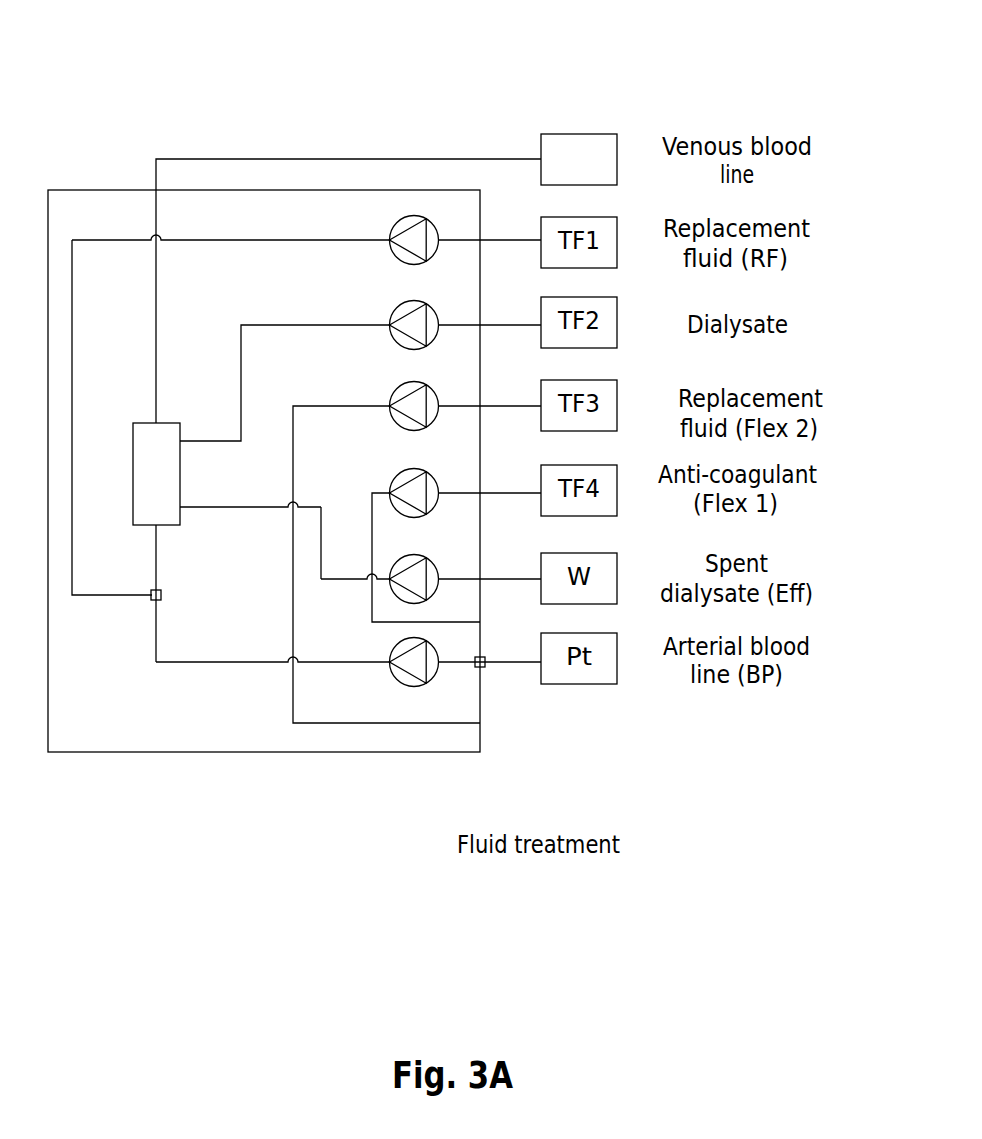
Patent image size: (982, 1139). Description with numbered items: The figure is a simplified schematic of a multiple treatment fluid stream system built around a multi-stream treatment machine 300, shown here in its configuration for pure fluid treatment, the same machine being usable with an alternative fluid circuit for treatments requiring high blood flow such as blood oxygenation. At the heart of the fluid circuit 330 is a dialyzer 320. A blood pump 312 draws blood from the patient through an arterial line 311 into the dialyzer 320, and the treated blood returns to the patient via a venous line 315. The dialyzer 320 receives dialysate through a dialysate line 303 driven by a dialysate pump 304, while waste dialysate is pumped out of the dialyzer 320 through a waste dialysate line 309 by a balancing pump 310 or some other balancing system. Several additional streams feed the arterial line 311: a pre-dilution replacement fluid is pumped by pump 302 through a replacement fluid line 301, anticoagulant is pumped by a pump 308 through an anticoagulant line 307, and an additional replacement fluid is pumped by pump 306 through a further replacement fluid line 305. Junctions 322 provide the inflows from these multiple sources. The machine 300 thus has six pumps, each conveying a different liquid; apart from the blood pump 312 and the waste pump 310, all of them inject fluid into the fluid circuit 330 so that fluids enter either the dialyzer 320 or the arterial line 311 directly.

The multi-stream treatment machine 300 is at (145, 726).
The replacement fluid line 301 is at (231, 448).
The pump 302 is at (466, 226).
The dialysate line 303 is at (285, 383).
The dialysate pump 304 is at (466, 311).
The replacement fluid line 305 is at (386, 564).
The pump 306 is at (466, 392).
The anticoagulant line 307 is at (396, 565).
The pump 308 is at (466, 479).
The waste dialysate line 309 is at (285, 542).
The balancing pump 310 is at (466, 565).
The arterial line 311 is at (273, 697).
The blood pump 312 is at (466, 648).
The venous line 315 is at (386, 244).
The dialyzer 320 is at (143, 436).
The junctions 322 is at (505, 689).
The fluid circuit 330 is at (430, 55).